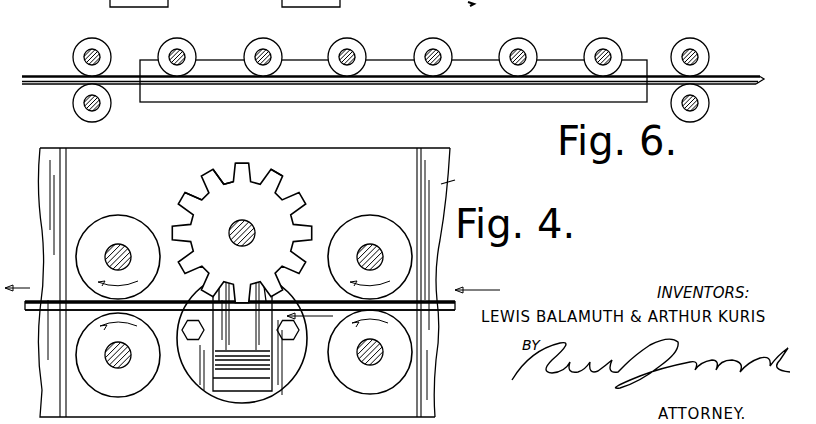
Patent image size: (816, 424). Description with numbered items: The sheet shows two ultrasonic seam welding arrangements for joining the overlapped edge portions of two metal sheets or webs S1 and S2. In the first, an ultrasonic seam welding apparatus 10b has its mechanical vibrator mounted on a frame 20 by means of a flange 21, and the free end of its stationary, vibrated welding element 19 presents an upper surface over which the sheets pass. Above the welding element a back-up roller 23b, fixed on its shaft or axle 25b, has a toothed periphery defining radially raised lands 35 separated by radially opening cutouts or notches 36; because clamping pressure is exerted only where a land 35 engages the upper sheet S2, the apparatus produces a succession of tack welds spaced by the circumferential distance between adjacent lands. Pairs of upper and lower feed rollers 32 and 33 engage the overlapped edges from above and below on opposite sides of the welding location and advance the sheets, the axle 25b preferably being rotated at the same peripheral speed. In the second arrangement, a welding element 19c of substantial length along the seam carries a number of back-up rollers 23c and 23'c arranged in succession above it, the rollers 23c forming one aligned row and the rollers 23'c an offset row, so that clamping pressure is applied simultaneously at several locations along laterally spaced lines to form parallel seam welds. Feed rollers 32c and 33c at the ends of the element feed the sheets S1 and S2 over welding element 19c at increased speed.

In FIG. 4, the ultrasonic seam welding apparatus 10b is at (491, 141).
In FIG. 4, the welding element 19 is at (261, 345).
In FIG. 6, the welding element 19c is at (311, 92).
In FIG. 4, the frame 20 is at (458, 183).
In FIG. 4, the flange 21 is at (196, 372).
In FIG. 4, the back-up roller 23b is at (268, 222).
In FIG. 6, the back-up rollers 23c is at (439, 50).
In FIG. 6, the back-up rollers 23'c is at (274, 50).
In FIG. 4, the shaft or axle 25b is at (258, 238).
In FIG. 4, the upper feed rollers 32 is at (130, 220).
In FIG. 6, the upper feed rollers 32c is at (736, 43).
In FIG. 4, the lower feed rollers 33 is at (134, 386).
In FIG. 6, the lower feed rollers 33c is at (98, 118).
In FIG. 4, the lands 35 is at (228, 173).
In FIG. 4, the cutouts or notches 36 is at (229, 167).
In FIG. 6, the metal sheet or web S1 is at (758, 86).
In FIG. 4, the metal sheet or web S1 is at (447, 309).
In FIG. 6, the metal sheet or web S2 is at (760, 77).
In FIG. 4, the metal sheet or web S2 is at (449, 297).